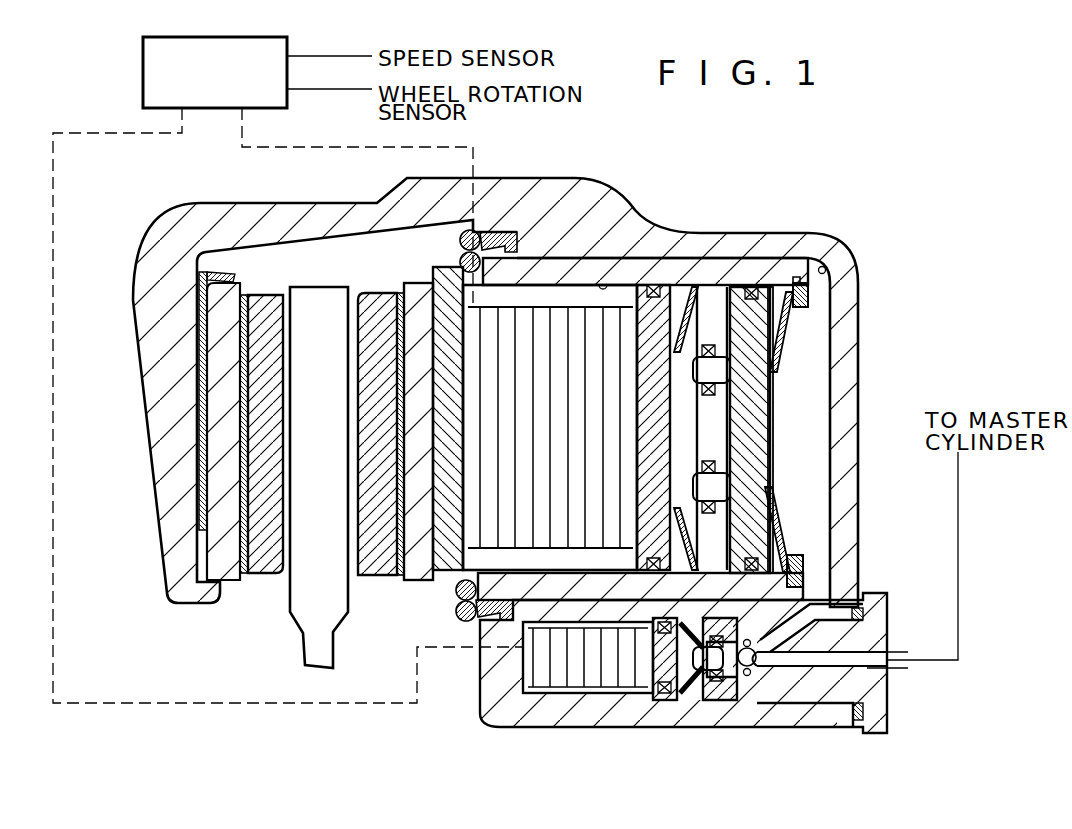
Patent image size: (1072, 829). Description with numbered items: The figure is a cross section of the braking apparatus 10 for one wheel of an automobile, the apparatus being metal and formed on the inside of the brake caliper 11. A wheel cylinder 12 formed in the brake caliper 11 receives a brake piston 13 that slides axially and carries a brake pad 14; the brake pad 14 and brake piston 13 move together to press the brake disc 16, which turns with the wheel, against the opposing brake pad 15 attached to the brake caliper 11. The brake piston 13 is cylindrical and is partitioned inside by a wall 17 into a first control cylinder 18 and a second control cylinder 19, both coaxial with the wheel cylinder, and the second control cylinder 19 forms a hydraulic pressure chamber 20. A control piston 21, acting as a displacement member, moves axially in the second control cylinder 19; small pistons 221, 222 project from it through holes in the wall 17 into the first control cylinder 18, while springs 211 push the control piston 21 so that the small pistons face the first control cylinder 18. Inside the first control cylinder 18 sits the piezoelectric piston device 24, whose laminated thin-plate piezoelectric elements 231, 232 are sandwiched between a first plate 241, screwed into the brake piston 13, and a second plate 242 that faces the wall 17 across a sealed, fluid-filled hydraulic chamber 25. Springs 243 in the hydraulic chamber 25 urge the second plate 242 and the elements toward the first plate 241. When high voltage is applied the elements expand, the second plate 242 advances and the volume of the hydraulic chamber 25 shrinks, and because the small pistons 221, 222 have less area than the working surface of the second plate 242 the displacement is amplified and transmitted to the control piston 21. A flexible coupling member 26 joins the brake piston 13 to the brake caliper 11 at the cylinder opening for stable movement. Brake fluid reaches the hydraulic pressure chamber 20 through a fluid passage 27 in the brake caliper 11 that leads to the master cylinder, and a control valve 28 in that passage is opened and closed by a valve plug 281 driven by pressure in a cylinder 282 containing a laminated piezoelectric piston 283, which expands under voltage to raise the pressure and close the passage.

The braking apparatus 10 is at (163, 212).
The brake caliper 11 is at (217, 215).
The wheel cylinder 12 is at (828, 268).
The brake piston 13 is at (728, 270).
The brake pad 14 is at (370, 563).
The brake pad 15 is at (257, 563).
The brake disc 16 is at (295, 298).
The wall 17 is at (752, 428).
The first control cylinder 18 is at (606, 285).
The second control cylinder 19 is at (781, 262).
The hydraulic pressure chamber 20 is at (835, 390).
The control piston 21 is at (143, 68).
The piezoelectric piston device 24 is at (427, 272).
The hydraulic chamber 25 is at (660, 430).
The coupling member 26 is at (458, 242).
The fluid passage 27 is at (813, 602).
The control valve 28 is at (707, 679).
The springs 211 is at (780, 517).
The small piston 221 is at (768, 381).
The small piston 222 is at (763, 482).
The piezoelectric element 231 is at (442, 540).
The piezoelectric element 232 is at (470, 535).
The first plate 241 is at (440, 303).
The second plate 242 is at (740, 445).
The springs 243 is at (688, 293).
The valve plug 281 is at (767, 660).
The cylinder 282 is at (683, 698).
The piezoelectric piston 283 is at (528, 655).